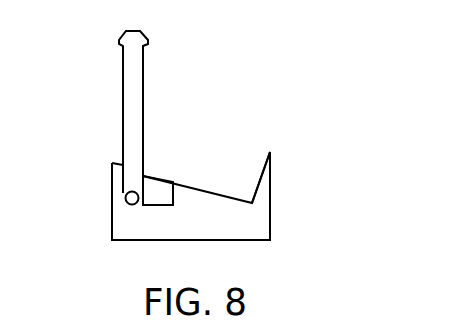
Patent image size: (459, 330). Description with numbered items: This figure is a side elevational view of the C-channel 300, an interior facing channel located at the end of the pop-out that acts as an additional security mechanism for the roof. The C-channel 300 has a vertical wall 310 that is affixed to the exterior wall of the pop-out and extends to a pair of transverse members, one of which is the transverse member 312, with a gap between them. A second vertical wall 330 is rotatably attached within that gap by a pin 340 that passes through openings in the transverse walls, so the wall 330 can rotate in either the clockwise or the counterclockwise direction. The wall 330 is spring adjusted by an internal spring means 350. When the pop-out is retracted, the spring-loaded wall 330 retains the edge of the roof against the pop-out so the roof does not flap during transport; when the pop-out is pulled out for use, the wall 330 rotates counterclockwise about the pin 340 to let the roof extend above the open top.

The C-channel 300 is at (248, 129).
The vertical wall 310 is at (270, 176).
The transverse member 312 is at (254, 229).
The vertical wall 330 is at (127, 70).
The pin 340 is at (126, 199).
The internal spring means 350 is at (156, 188).